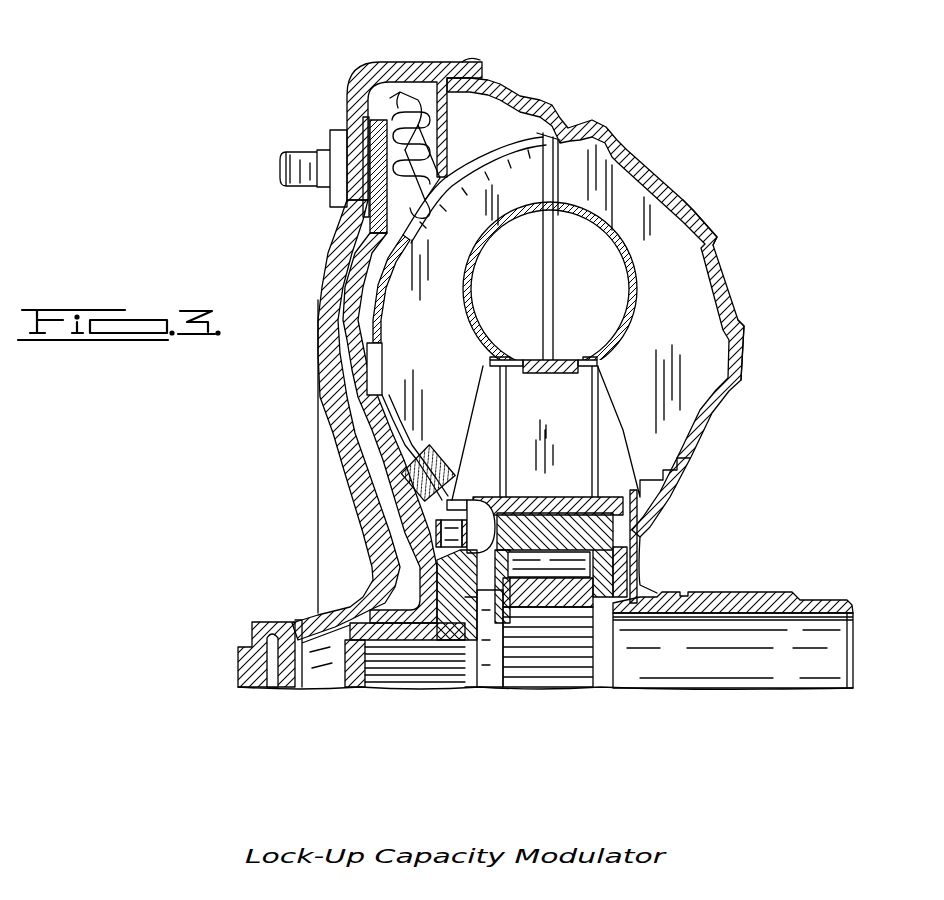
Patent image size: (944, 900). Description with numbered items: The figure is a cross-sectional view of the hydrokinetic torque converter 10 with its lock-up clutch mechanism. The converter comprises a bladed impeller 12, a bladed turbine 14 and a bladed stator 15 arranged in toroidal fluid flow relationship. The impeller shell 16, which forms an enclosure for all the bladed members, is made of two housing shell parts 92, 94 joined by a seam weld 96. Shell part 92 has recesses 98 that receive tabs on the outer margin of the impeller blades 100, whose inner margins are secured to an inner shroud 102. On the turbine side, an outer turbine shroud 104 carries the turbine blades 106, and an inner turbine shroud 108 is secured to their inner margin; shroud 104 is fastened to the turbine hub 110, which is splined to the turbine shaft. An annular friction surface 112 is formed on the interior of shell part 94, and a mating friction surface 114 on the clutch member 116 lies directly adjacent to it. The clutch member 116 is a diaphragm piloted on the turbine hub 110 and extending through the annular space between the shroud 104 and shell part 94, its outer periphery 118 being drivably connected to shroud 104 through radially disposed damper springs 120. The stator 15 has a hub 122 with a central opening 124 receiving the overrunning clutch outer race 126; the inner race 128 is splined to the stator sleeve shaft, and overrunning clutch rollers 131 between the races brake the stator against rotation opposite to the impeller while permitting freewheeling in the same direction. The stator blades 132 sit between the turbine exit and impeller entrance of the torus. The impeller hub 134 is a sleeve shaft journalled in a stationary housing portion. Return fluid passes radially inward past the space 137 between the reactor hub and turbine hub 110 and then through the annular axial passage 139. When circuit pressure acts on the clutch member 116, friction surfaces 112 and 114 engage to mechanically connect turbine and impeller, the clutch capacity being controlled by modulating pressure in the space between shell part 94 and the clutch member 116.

The hydrokinetic torque converter 10 is at (554, 87).
The bladed impeller 12 is at (625, 158).
The bladed turbine 14 is at (416, 248).
The bladed stator 15 is at (572, 446).
The impeller shell 16 is at (432, 62).
The housing shell part 92 is at (712, 237).
The housing shell part 94 is at (318, 286).
The seam weld 96 is at (474, 60).
The recesses 98 is at (739, 349).
The impeller blades 100 is at (690, 339).
The inner shroud 102 is at (628, 278).
The outer turbine shroud 104 is at (470, 206).
The turbine blades 106 is at (448, 365).
The inner turbine shroud 108 is at (482, 248).
The turbine hub 110 is at (447, 580).
The annular friction surface 112 is at (358, 118).
The friction surface 114 is at (373, 188).
The clutch member 116 is at (356, 373).
The outer periphery 118 is at (398, 97).
The damper springs 120 is at (428, 150).
The hub 122 is at (495, 497).
The central opening 124 is at (612, 527).
The overrunning clutch outer race 126 is at (490, 527).
The overrunning clutch inner race 128 is at (525, 598).
The overrunning clutch rollers 131 is at (580, 558).
The stator blades 132 is at (568, 406).
The impeller hub 134 is at (742, 597).
The opening 137 is at (480, 557).
The opening 139 is at (648, 570).